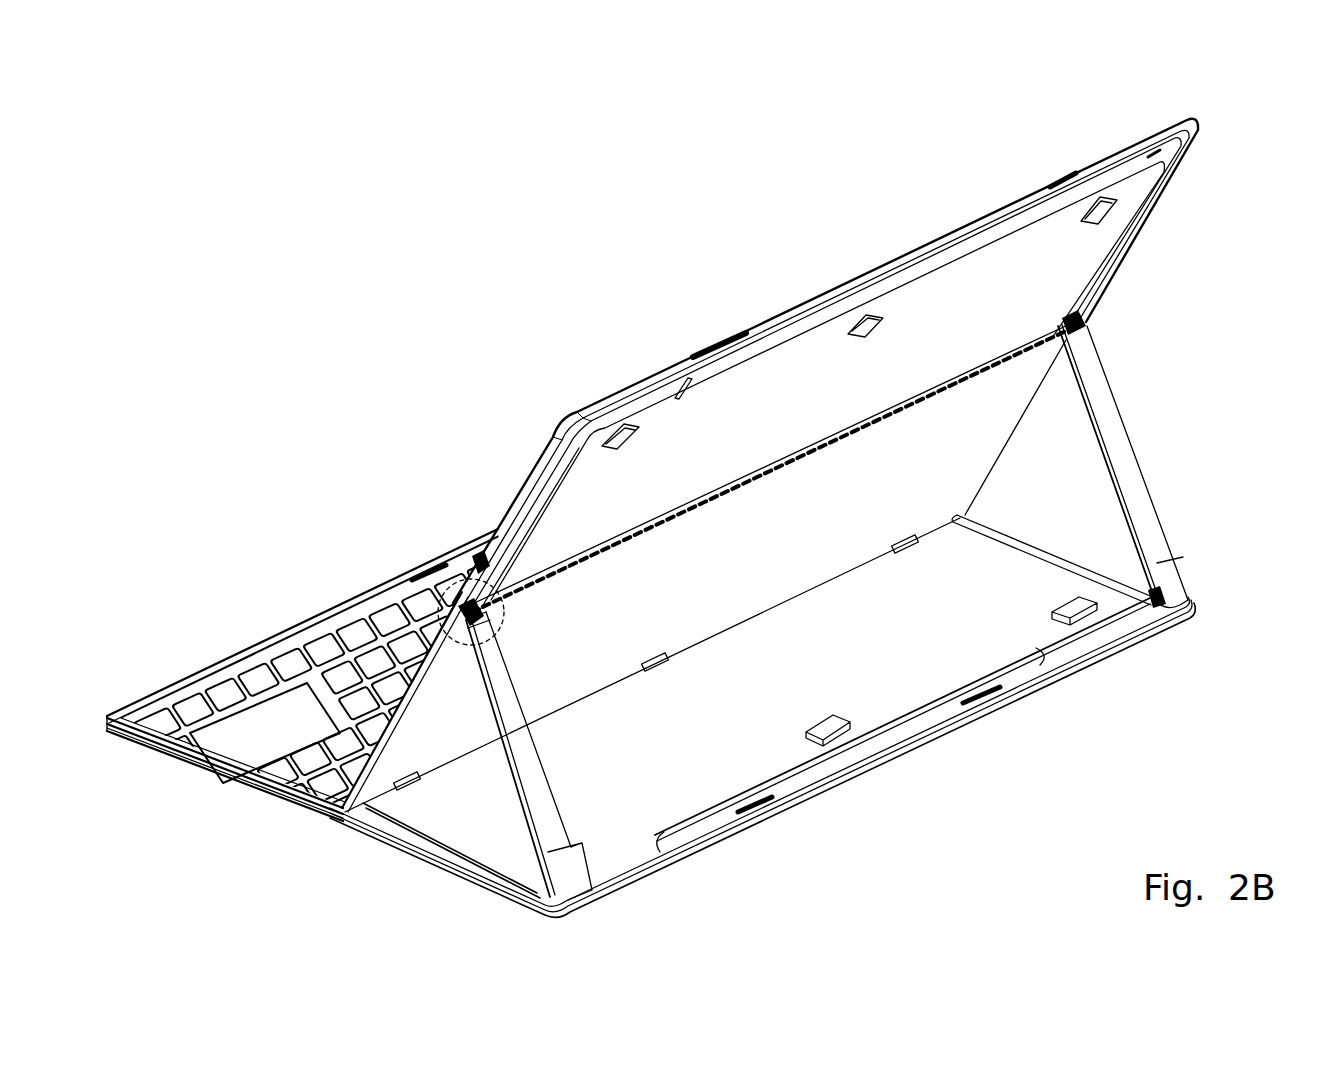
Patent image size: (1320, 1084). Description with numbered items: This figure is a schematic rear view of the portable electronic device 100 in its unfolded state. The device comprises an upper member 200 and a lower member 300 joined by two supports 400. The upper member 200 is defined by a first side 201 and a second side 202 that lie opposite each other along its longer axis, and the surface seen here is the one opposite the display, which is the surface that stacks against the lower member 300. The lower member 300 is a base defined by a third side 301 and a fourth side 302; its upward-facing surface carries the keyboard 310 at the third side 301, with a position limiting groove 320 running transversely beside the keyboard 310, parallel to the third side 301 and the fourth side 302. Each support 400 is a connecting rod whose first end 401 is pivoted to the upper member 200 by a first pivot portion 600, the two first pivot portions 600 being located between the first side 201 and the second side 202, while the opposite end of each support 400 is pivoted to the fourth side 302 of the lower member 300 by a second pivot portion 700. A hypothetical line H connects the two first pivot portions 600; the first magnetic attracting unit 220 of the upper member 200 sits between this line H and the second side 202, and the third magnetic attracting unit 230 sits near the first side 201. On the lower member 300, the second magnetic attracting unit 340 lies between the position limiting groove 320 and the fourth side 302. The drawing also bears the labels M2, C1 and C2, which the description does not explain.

The portable electronic device 100 is at (218, 172).
The upper member 200 is at (1210, 105).
The first side 201 is at (363, 822).
The second side 202 is at (1024, 194).
The first magnetic attracting unit 220 is at (858, 312).
The third magnetic attracting unit 230 is at (915, 530).
The lower member 300 is at (364, 702).
The third side 301 is at (247, 642).
The fourth side 302 is at (831, 793).
The keyboard 310 is at (272, 745).
The position limiting groove 320 is at (338, 817).
The second magnetic attracting unit 340 is at (1078, 604).
The support 400 is at (548, 757).
The first end 401 is at (492, 674).
The first pivot portion 600 is at (496, 614).
The second pivot portion 700 is at (628, 843).
The hypothetical line H is at (832, 448).
The magnetic region M2 is at (458, 645).
The rotation direction 1 C1 is at (639, 671).
The rotation direction 2 C2 is at (612, 906).